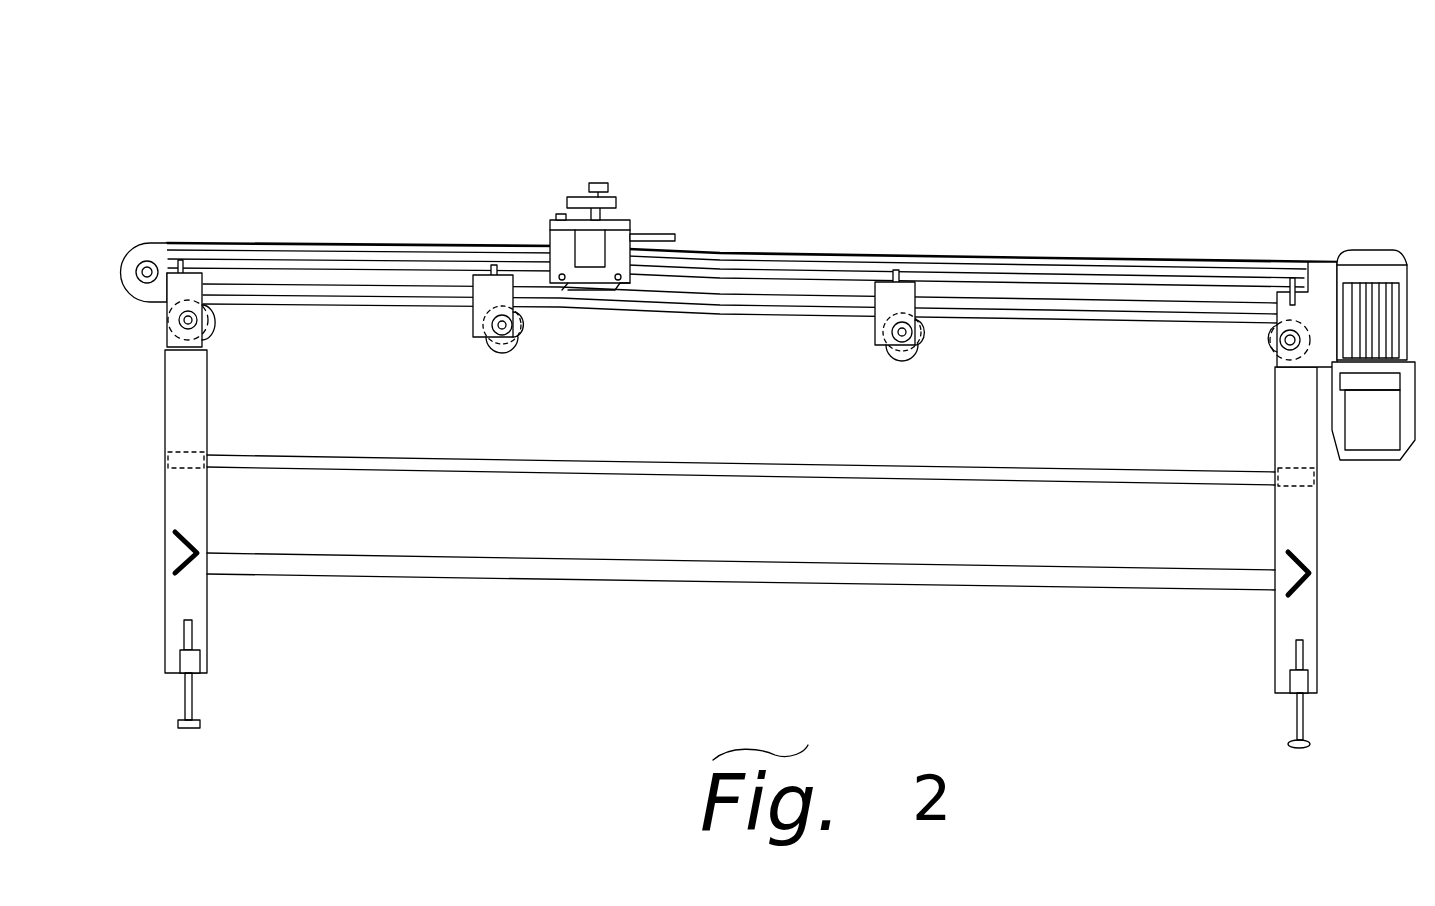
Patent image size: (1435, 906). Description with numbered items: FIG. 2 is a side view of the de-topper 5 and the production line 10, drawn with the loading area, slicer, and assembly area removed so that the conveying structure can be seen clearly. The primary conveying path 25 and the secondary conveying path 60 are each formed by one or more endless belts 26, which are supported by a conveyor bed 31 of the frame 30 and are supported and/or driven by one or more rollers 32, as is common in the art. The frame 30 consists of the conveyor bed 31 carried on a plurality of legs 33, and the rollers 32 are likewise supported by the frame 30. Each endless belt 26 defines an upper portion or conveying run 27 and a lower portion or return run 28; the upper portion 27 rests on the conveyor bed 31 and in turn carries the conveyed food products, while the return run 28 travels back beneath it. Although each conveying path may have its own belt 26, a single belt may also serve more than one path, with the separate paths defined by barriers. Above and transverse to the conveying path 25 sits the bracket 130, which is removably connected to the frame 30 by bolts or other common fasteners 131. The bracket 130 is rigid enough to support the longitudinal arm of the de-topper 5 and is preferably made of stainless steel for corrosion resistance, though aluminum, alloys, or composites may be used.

The production line 10 is at (1073, 147).
The de-topper 5 is at (612, 164).
The primary conveying path 25 is at (335, 243).
The endless belt 26 is at (742, 244).
The upper portion (conveying run) 27 is at (882, 254).
The lower portion (return run) 28 is at (1076, 318).
The frame 30 is at (153, 358).
The conveyor bed 31 is at (778, 265).
The roller 32 is at (505, 345).
The leg 33 is at (173, 490).
The secondary conveying path 60 is at (1208, 258).
The bracket 130 is at (555, 244).
The fastener 131 is at (616, 285).